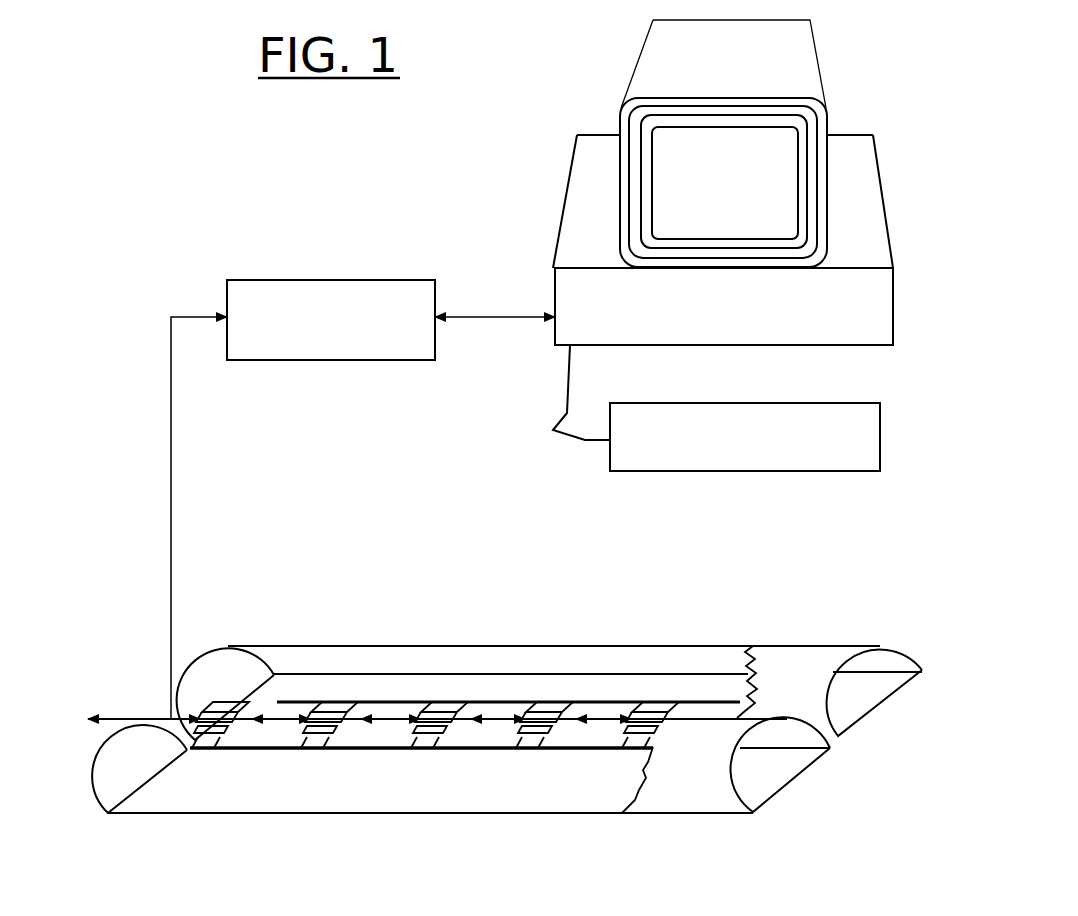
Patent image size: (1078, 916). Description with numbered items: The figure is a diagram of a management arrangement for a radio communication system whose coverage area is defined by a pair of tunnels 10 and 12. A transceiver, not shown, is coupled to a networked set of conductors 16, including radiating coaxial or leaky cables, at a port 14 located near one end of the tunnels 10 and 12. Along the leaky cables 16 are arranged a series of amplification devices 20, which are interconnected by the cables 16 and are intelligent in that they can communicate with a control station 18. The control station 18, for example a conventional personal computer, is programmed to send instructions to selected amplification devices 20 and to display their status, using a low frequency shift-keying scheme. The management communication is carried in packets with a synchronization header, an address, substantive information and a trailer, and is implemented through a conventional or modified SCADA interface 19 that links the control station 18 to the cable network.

The tunnel 10 is at (787, 785).
The tunnel 12 is at (875, 717).
The port 14 is at (192, 738).
The conductors 16 is at (280, 698).
The control station 18 is at (560, 218).
The SCADA interface 19 is at (332, 360).
The amplification devices 20 is at (347, 705).